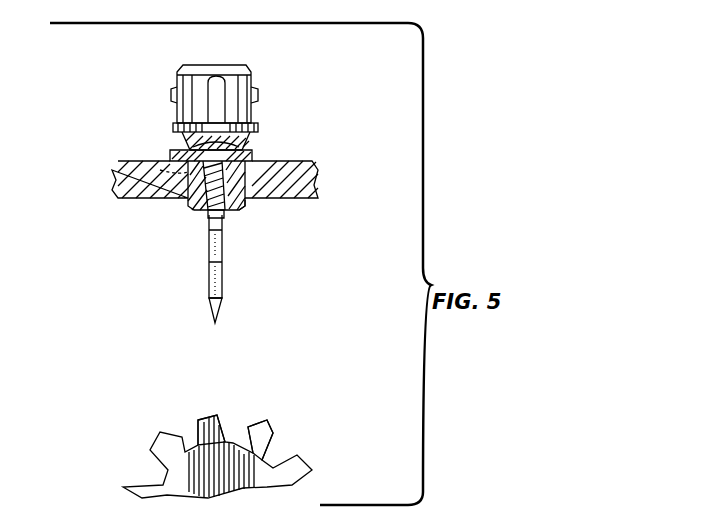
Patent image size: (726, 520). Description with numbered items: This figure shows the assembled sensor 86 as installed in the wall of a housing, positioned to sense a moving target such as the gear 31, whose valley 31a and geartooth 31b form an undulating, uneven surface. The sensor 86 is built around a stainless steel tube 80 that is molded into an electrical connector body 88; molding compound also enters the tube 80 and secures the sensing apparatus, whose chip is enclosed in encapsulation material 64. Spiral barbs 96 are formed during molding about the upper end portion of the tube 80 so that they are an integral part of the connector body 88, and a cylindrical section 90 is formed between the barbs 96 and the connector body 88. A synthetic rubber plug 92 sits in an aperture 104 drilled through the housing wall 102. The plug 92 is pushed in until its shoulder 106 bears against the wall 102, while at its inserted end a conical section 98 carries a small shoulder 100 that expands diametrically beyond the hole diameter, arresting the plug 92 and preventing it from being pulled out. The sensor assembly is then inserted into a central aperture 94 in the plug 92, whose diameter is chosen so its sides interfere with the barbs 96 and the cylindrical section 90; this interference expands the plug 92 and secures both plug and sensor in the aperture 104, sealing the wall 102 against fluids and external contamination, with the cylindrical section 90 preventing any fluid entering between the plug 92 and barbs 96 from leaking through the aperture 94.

The sensor 86 is at (158, 61).
The electrical connector body 88 is at (257, 78).
The cylindrical section 90 is at (232, 147).
The shoulder 106 is at (172, 150).
The aperture 104 is at (176, 175).
The housing wall 102 is at (114, 178).
The small shoulder 100 is at (184, 204).
The conical section 98 is at (196, 211).
The spiral barbs 96 is at (203, 214).
The central aperture 94 is at (209, 214).
The rubber plug 92 is at (250, 205).
The stainless steel tube 80 is at (227, 240).
The encapsulation material 64 is at (226, 297).
The gear 31 is at (196, 450).
The valley 31a is at (231, 441).
The geartooth 31b is at (268, 424).